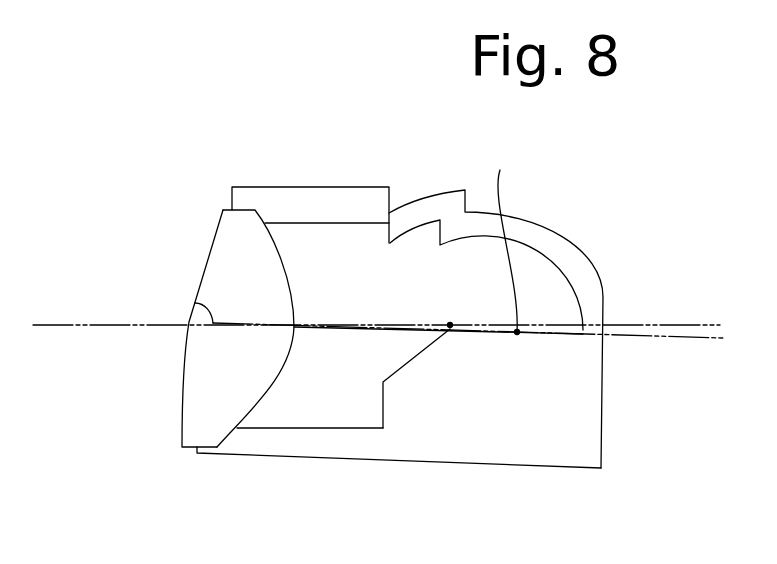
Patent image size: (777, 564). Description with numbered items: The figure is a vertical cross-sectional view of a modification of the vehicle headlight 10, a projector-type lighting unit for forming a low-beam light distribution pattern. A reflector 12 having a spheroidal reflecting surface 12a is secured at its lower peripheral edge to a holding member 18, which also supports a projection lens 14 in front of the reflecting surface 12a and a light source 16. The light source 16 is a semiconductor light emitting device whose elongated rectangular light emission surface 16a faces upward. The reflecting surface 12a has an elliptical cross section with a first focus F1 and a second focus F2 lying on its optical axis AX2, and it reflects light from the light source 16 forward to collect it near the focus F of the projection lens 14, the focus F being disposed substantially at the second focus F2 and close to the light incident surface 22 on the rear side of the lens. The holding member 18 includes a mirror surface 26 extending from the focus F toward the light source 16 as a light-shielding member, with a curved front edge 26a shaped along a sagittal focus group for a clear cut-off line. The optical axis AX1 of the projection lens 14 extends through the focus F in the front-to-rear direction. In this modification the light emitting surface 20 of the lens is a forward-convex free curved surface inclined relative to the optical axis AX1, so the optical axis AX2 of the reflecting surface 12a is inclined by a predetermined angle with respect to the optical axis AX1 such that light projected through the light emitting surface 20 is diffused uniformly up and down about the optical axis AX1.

The vehicle headlight 10 is at (392, 167).
The reflector 12 is at (563, 242).
The reflecting surface 12a is at (572, 295).
The projection lens 14 is at (226, 228).
The light source 16 is at (522, 238).
The elongated rectangular light emission surface 16a is at (507, 251).
The holding member 18 is at (459, 463).
The light emitting surface 20 is at (204, 268).
The light incident surface 22 is at (292, 280).
The mirror surface 26 is at (490, 327).
The front edge 26a is at (450, 331).
The optical axis of the projection lens AX1 is at (70, 323).
The optical axis of the reflecting surface AX2 is at (195, 303).
The first focus F1 is at (517, 334).
The second focus F2 is at (413, 292).
The focus F is at (448, 325).